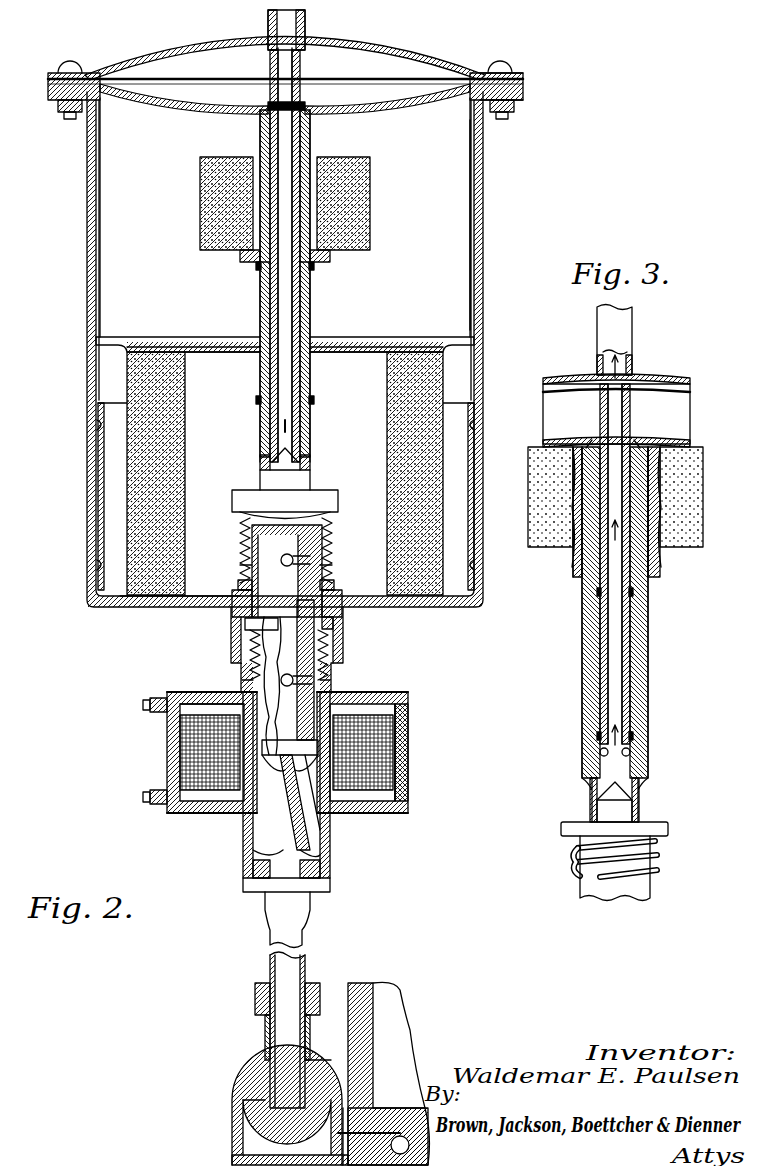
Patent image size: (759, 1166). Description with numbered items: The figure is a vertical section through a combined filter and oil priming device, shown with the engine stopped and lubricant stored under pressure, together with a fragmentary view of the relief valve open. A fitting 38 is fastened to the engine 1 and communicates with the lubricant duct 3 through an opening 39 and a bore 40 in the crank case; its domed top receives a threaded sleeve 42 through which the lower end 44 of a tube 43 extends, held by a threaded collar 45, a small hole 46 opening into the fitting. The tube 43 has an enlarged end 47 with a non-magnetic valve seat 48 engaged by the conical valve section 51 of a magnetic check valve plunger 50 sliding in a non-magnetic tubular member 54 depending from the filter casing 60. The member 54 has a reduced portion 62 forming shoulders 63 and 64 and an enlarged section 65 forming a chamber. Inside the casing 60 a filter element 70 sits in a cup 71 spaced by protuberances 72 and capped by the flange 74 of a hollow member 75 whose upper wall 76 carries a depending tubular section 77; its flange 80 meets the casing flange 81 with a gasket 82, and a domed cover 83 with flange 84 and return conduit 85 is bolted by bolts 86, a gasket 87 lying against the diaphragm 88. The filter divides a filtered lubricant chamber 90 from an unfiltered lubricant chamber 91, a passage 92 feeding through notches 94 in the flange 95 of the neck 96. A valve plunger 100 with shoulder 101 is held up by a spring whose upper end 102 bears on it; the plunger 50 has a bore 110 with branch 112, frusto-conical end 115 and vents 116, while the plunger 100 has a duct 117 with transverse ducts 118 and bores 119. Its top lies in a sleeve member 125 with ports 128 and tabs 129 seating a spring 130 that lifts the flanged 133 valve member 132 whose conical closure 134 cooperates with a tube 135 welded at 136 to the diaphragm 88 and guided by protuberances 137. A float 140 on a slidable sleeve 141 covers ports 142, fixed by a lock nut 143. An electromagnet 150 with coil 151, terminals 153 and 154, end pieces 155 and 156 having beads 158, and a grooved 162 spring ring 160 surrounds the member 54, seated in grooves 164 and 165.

In FIG. 2, the engine 1 is at (385, 997).
In FIG. 2, the lubricant duct 3 is at (400, 1136).
In FIG. 2, the fitting 38 is at (232, 1120).
In FIG. 2, the opening 39 is at (338, 1135).
In FIG. 2, the bore 40 is at (370, 1130).
In FIG. 2, the threaded sleeve 42 is at (265, 1030).
In FIG. 2, the tube 43 is at (270, 962).
In FIG. 2, the lower end of tube 44 is at (270, 1095).
In FIG. 2, the threaded collar 45 is at (255, 997).
In FIG. 2, the small hole 46 is at (305, 1062).
In FIG. 2, the enlarged end 47 is at (312, 905).
In FIG. 2, the valve seat 48 is at (253, 870).
In FIG. 2, the check valve plunger 50 is at (243, 838).
In FIG. 2, the conical valve section 51 is at (322, 856).
In FIG. 2, the tubular member 54 is at (243, 860).
In FIG. 2, the filter casing 60 is at (87, 360).
In FIG. 2, the reduced diameter portion 62 is at (325, 700).
In FIG. 2, the upper shoulder 63 is at (242, 680).
In FIG. 2, the lower shoulder 64 is at (400, 790).
In FIG. 2, the enlarged section 65 is at (343, 650).
In FIG. 2, the filter element 70 is at (420, 350).
In FIG. 2, the supporting cup 71 is at (150, 607).
In FIG. 2, the protuberances 72 is at (95, 424).
In FIG. 2, the inwardly directed flange 74 is at (378, 340).
In FIG. 2, the hollow member 75 is at (479, 168).
In FIG. 2, the upper wall 76 is at (385, 112).
In FIG. 2, the tubular section 77 is at (305, 126).
In FIG. 3, the tubular section 77 is at (632, 628).
In FIG. 2, the outwardly disposed flange 80 is at (523, 90).
In FIG. 2, the flange 81 is at (514, 108).
In FIG. 2, the gasket 82 is at (523, 96).
In FIG. 2, the domed cover 83 is at (400, 52).
In FIG. 3, the domed cover 83 is at (558, 378).
In FIG. 2, the flange 84 is at (522, 78).
In FIG. 2, the lubricant return conduit 85 is at (268, 22).
In FIG. 3, the lubricant return conduit 85 is at (622, 325).
In FIG. 2, the bolts 86 is at (72, 66).
In FIG. 2, the gasket 87 is at (523, 82).
In FIG. 2, the diaphragm 88 is at (402, 102).
In FIG. 3, the diaphragm 88 is at (650, 389).
In FIG. 2, the filtered lubricant chamber 90 is at (212, 355).
In FIG. 2, the unfiltered lubricant chamber 91 is at (460, 375).
In FIG. 2, the passage 92 is at (90, 477).
In FIG. 2, the notches 94 is at (240, 615).
In FIG. 2, the flange 95 is at (342, 615).
In FIG. 2, the neck portion 96 is at (335, 590).
In FIG. 2, the valve plunger 100 is at (250, 650).
In FIG. 2, the shoulder 101 is at (231, 633).
In FIG. 2, the upper end of spring 102 is at (340, 633).
In FIG. 2, the central bore 110 is at (285, 810).
In FIG. 2, the branch 112 is at (325, 835).
In FIG. 2, the frusto-conical upper end 115 is at (280, 760).
In FIG. 2, the horizontal vents 116 is at (285, 790).
In FIG. 2, the central duct 117 is at (330, 655).
In FIG. 2, the transverse ducts 118 is at (300, 680).
In FIG. 2, the transverse bores 119 is at (300, 558).
In FIG. 2, the sleeve member 125 is at (330, 528).
In FIG. 3, the sleeve member 125 is at (625, 890).
In FIG. 2, the ports 128 is at (242, 568).
In FIG. 2, the tabs 129 is at (238, 583).
In FIG. 2, the spring 130 is at (240, 532).
In FIG. 3, the spring 130 is at (572, 865).
In FIG. 2, the valve member 132 is at (330, 487).
In FIG. 3, the valve member 132 is at (554, 831).
In FIG. 2, the flange 133 is at (232, 500).
In FIG. 2, the conical valve closure 134 is at (266, 450).
In FIG. 3, the conical valve closure 134 is at (632, 770).
In FIG. 2, the tube 135 is at (300, 428).
In FIG. 3, the tube 135 is at (600, 428).
In FIG. 2, the weld 136 is at (276, 102).
In FIG. 2, the protuberances 137 is at (258, 266).
In FIG. 3, the protuberances 137 is at (592, 592).
In FIG. 2, the float 140 is at (200, 199).
In FIG. 3, the float 140 is at (615, 497).
In FIG. 2, the slidable sleeve 141 is at (262, 292).
In FIG. 3, the slidable sleeve 141 is at (648, 660).
In FIG. 2, the ports 142 is at (310, 458).
In FIG. 3, the ports 142 is at (640, 782).
In FIG. 2, the lock nut 143 is at (240, 256).
In FIG. 3, the lock nut 143 is at (583, 552).
In FIG. 2, the electromagnet 150 is at (273, 746).
In FIG. 2, the coil 151 is at (170, 745).
In FIG. 2, the terminal 153 is at (146, 797).
In FIG. 2, the terminal 154 is at (146, 703).
In FIG. 2, the end piece 155 is at (395, 692).
In FIG. 2, the end piece 156 is at (390, 813).
In FIG. 2, the bead 158 is at (408, 700).
In FIG. 2, the spring ring 160 is at (408, 736).
In FIG. 2, the grooves 162 is at (172, 694).
In FIG. 2, the shallow groove 164 is at (210, 702).
In FIG. 2, the shallow groove 165 is at (210, 813).